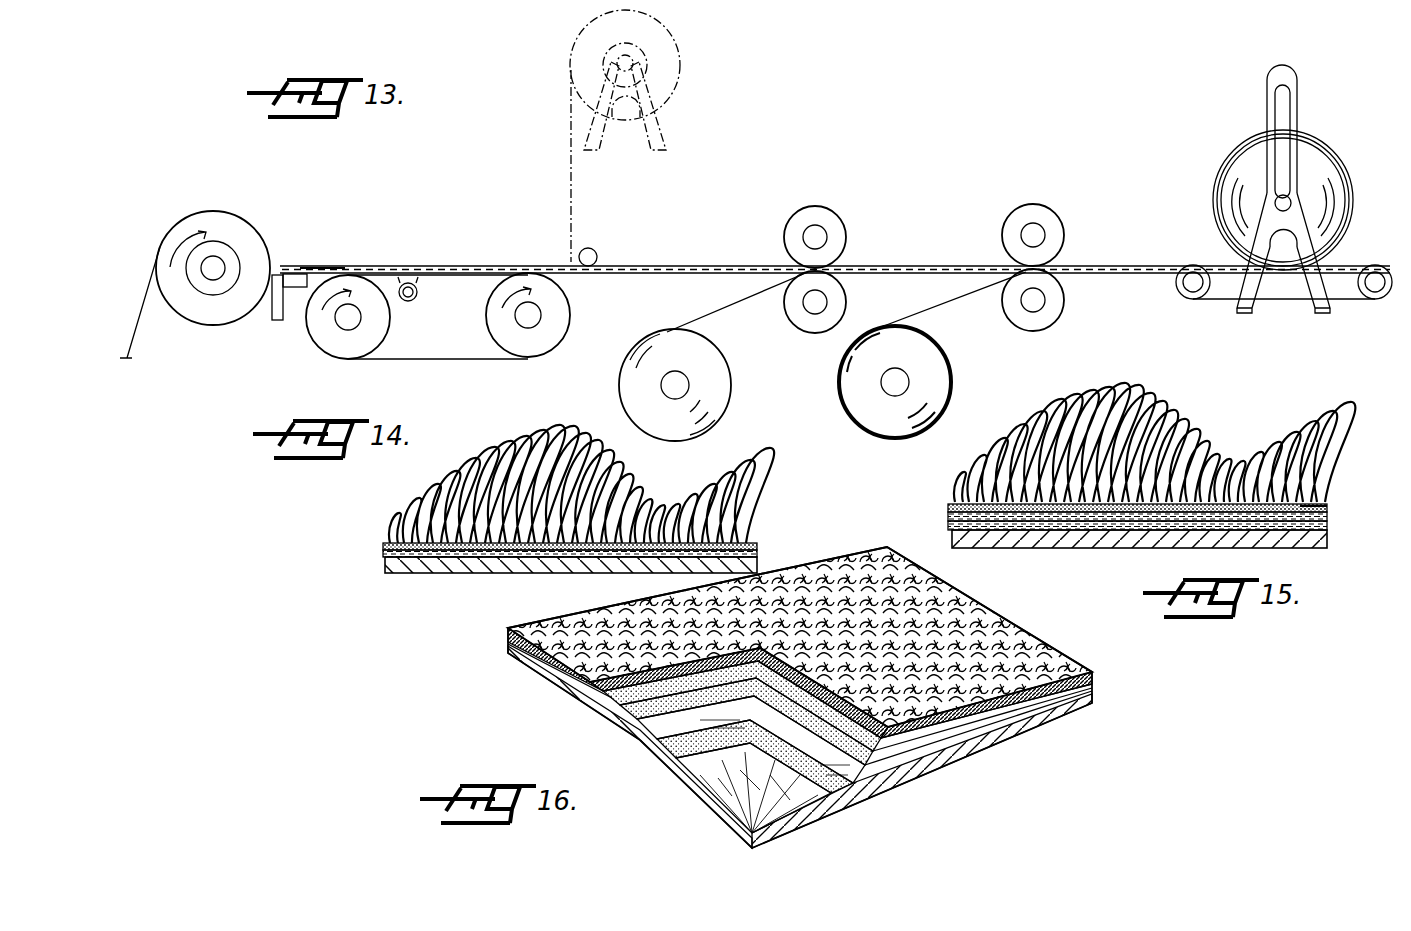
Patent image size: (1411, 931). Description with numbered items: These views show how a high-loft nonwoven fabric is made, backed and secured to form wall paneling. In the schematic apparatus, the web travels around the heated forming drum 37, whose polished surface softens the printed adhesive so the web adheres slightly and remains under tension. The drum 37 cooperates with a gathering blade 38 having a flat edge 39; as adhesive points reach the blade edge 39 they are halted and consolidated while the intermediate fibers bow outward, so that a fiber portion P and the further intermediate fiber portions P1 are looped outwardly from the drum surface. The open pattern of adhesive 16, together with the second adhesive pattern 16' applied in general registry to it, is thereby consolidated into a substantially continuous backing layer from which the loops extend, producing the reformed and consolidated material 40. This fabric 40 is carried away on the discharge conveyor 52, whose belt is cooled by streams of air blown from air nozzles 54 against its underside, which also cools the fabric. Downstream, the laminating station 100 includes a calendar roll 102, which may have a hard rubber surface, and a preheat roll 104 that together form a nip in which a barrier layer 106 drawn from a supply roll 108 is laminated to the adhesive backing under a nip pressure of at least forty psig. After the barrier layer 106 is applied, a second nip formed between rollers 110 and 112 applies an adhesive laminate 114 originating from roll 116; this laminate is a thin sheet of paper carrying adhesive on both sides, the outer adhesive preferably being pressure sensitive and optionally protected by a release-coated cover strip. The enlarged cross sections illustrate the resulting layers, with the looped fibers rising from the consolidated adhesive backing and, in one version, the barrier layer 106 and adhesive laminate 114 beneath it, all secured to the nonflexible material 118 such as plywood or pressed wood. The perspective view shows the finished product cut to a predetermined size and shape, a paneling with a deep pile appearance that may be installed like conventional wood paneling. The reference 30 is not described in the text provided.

In FIG. 13, the backing web 30 is at (303, 228).
In FIG. 13, the heated forming drum 37 is at (221, 226).
In FIG. 13, the gathering blade 38 is at (276, 321).
In FIG. 13, the flat edge 39 is at (276, 266).
In FIG. 13, the reformed and consolidated material 40 is at (332, 270).
In FIG. 16, the reformed and consolidated material 40 is at (506, 650).
In FIG. 13, the discharge conveyor 52 is at (332, 354).
In FIG. 13, the air nozzles 54 is at (409, 303).
In FIG. 13, the laminating station 100 is at (852, 190).
In FIG. 13, the calendar roll 102 is at (840, 233).
In FIG. 13, the preheat roll 104 is at (798, 322).
In FIG. 13, the barrier layer 106 is at (742, 300).
In FIG. 15, the barrier layer 106 is at (952, 520).
In FIG. 16, the barrier layer 106 is at (878, 760).
In FIG. 13, the supply roll 108 is at (626, 362).
In FIG. 13, the roller 110 is at (1020, 207).
In FIG. 13, the roller 112 is at (1010, 314).
In FIG. 13, the adhesive laminate 114 is at (958, 300).
In FIG. 15, the adhesive laminate 114 is at (1329, 530).
In FIG. 16, the adhesive laminate 114 is at (676, 755).
In FIG. 13, the roll 116 is at (866, 428).
In FIG. 14, the fiber portion P is at (530, 430).
In FIG. 15, the fiber portion P is at (1106, 386).
In FIG. 14, the intermediate fiber portions P1 is at (575, 468).
In FIG. 15, the intermediate fiber portions P1 is at (1175, 430).
In FIG. 14, the open pattern of adhesive 16 is at (594, 527).
In FIG. 15, the open pattern of adhesive 16 is at (1113, 499).
In FIG. 16, the open pattern of adhesive 16 is at (800, 697).
In FIG. 14, the second adhesive pattern 16' is at (534, 549).
In FIG. 15, the second adhesive pattern 16' is at (1334, 490).
In FIG. 16, the second adhesive pattern 16' is at (824, 721).
In FIG. 14, the nonflexible material 118 is at (420, 574).
In FIG. 15, the nonflexible material 118 is at (1072, 548).
In FIG. 16, the nonflexible material 118 is at (800, 815).